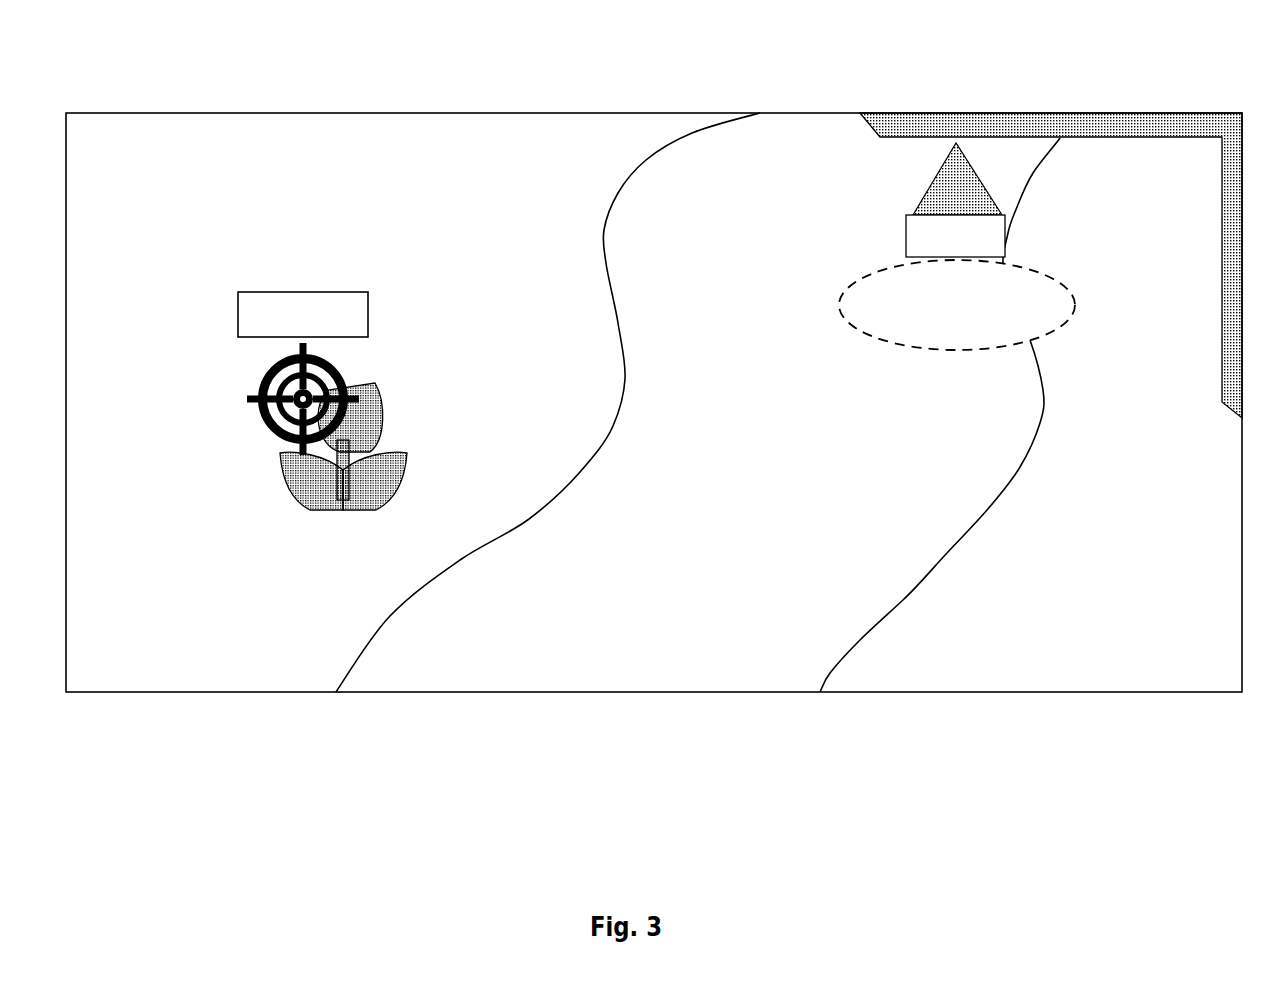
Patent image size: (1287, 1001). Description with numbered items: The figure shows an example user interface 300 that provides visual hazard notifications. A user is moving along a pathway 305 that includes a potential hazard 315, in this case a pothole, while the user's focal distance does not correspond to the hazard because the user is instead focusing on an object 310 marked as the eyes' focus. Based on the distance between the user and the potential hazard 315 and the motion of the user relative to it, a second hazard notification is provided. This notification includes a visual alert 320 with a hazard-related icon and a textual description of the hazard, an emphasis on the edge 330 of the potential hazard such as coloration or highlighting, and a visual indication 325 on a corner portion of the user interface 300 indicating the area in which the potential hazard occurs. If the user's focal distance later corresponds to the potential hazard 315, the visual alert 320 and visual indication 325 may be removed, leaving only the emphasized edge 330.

The user interface 300 is at (142, 162).
The pathway 305 is at (601, 679).
The object 310 is at (295, 522).
The potential hazard 315 is at (986, 325).
The visual alert 320 is at (878, 208).
The visual indication 325 is at (1203, 93).
The edge of the potential hazard 330 is at (1061, 264).